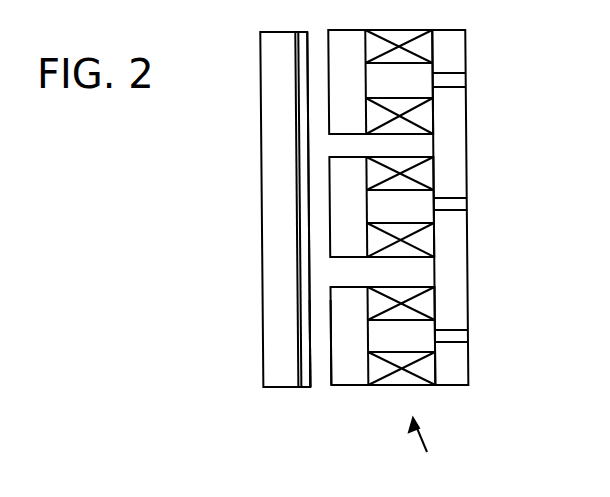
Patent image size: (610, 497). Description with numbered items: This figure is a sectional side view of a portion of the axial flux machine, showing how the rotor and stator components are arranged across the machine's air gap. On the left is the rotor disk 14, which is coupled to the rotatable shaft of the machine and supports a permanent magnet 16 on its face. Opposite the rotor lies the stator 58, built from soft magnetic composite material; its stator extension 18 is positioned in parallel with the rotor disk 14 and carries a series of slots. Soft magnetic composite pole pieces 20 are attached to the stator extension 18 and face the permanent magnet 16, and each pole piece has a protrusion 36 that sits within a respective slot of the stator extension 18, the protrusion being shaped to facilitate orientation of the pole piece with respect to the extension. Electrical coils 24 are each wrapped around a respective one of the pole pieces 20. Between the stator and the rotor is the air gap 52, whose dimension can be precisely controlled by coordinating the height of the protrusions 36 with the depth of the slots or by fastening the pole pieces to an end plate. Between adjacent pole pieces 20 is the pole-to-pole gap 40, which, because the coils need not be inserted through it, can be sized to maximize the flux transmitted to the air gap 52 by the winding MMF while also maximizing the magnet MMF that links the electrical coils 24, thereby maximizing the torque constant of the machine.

The rotor disk 14 is at (275, 202).
The permanent magnet 16 is at (294, 122).
The stator extension 18 is at (453, 98).
The pole pieces 20 is at (355, 375).
The electrical coils 24 is at (423, 300).
The protrusion 36 is at (460, 208).
The pole-to-pole gap 40 is at (345, 267).
The air gap 52 is at (322, 352).
The stator 58 is at (433, 453).